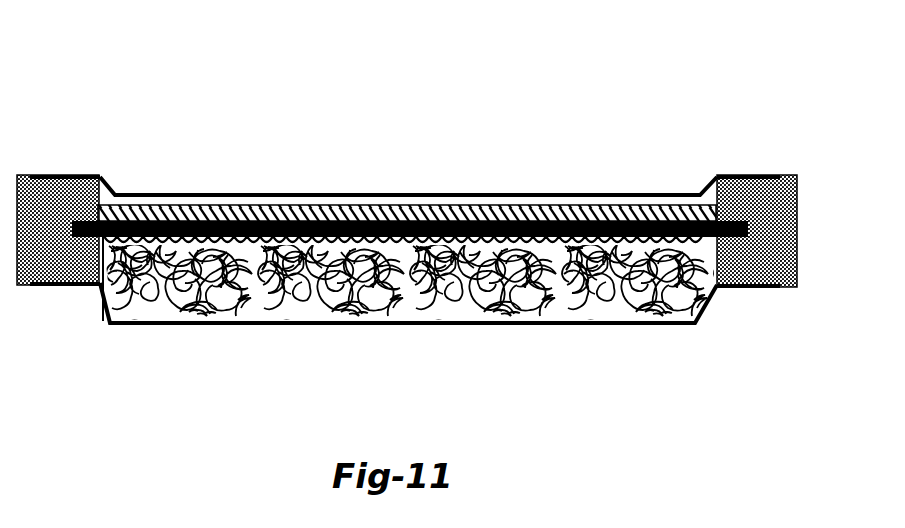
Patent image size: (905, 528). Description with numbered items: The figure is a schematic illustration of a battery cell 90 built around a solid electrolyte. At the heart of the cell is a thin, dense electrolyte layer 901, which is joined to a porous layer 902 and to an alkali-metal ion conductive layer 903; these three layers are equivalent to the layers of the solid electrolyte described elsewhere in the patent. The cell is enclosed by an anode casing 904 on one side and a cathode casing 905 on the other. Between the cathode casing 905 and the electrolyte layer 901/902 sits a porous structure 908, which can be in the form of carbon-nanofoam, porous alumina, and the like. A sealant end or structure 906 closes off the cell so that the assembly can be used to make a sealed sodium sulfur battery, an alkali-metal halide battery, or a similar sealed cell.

The battery cell 90 is at (193, 76).
The thin, dense electrolyte layer 901 is at (215, 221).
The porous layer 902 is at (358, 220).
The alkali-metal ion conductive layer 903 is at (478, 208).
The anode casing 904 is at (598, 195).
The cathode casing 905 is at (600, 325).
The sealant end 906 is at (747, 187).
The porous structure 908 is at (232, 303).